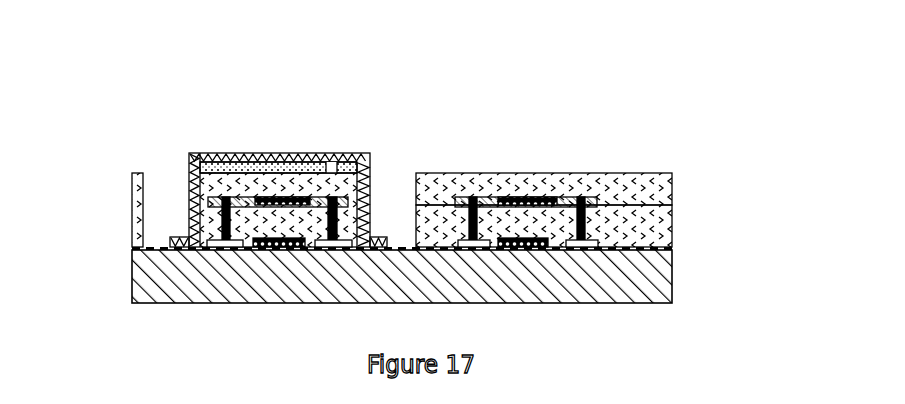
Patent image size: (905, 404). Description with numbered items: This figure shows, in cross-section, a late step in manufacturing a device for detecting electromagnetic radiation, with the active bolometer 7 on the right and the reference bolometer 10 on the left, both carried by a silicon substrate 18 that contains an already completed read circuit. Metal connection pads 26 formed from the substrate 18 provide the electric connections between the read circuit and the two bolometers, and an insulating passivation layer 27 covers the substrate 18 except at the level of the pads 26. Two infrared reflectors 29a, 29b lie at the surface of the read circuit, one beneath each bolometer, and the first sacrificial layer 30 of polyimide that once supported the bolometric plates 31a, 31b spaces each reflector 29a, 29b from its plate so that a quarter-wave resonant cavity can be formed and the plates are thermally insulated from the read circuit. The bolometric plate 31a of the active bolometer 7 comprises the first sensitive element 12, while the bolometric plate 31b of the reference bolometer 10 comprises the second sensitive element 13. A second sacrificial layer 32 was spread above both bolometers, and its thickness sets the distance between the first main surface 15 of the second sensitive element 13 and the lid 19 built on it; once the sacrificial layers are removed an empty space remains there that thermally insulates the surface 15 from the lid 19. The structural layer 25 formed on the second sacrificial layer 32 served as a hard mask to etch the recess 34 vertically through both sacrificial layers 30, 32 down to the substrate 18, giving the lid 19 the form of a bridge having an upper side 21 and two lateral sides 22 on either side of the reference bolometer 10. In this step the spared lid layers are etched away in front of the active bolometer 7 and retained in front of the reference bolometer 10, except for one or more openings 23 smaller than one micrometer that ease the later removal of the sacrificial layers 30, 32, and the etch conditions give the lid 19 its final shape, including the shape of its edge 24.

The active bolometer 7 is at (580, 189).
The reference bolometer 10 is at (263, 162).
The first sensitive element 12 is at (519, 197).
The second sensitive element 13 is at (283, 205).
The first main surface 15 is at (267, 200).
The silicon substrate 18 is at (607, 282).
The lid 19 is at (235, 194).
The upper side 21 is at (291, 160).
The lateral sides 22 is at (188, 192).
The opening 23 is at (330, 172).
The edge 24 is at (395, 250).
The structural layer 25 is at (213, 166).
The metal connection pads 26 is at (595, 238).
The insulating passivation layer 27 is at (638, 243).
The infrared reflector 29a is at (547, 247).
The infrared reflector 29b is at (302, 245).
The first sacrificial layer 30 is at (428, 228).
The bolometric plate 31a is at (560, 203).
The bolometric plate 31b is at (222, 210).
The second sacrificial layer 32 is at (550, 183).
The recess 34 is at (386, 217).